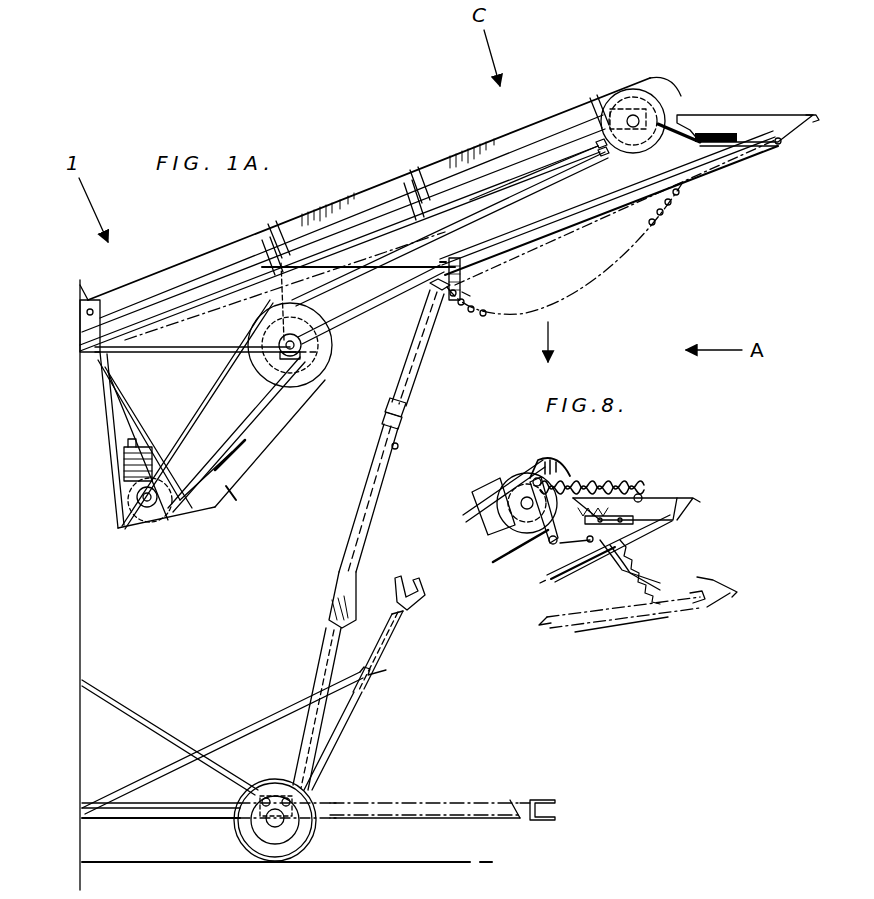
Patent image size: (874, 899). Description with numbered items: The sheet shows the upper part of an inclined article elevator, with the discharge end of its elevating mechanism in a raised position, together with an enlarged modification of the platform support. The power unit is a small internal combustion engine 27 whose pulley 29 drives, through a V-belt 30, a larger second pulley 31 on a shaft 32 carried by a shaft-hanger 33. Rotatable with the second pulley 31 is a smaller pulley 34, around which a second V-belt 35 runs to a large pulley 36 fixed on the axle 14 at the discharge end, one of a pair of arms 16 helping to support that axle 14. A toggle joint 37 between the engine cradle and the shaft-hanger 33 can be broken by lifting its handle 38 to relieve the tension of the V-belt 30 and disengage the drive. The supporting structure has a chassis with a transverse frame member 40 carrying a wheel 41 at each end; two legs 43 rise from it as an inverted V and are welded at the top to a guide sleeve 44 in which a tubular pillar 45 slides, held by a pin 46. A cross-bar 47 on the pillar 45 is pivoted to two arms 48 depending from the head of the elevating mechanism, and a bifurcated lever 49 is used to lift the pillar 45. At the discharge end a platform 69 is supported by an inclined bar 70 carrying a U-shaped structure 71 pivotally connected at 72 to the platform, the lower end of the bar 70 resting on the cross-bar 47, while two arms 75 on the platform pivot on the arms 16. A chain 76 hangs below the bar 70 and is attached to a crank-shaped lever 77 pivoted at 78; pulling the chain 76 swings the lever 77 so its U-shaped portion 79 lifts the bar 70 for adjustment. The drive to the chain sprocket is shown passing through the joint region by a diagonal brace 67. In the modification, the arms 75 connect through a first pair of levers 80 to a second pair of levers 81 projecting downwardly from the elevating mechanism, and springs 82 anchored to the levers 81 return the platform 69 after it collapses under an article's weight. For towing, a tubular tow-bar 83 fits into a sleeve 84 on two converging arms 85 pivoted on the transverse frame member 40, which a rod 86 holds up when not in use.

In FIG. 1A, the axle 14 is at (632, 114).
In FIG. 8, the axle 14 is at (527, 500).
In FIG. 1A, the arms 16 is at (562, 152).
In FIG. 8, the arms 16 is at (493, 532).
In FIG. 1A, the internal combustion engine 27 is at (138, 517).
In FIG. 1A, the pulley 29 is at (149, 510).
In FIG. 1A, the V-belt 30 is at (222, 370).
In FIG. 1A, the second pulley 31 is at (332, 346).
In FIG. 1A, the shaft 32 is at (295, 358).
In FIG. 1A, the shaft-hanger 33 is at (291, 332).
In FIG. 1A, the smaller pulley 34 is at (296, 354).
In FIG. 1A, the second V-belt 35 is at (578, 205).
In FIG. 1A, the large pulley 36 is at (662, 143).
In FIG. 1A, the toggle joint 37 is at (233, 450).
In FIG. 1A, the handle 38 is at (230, 492).
In FIG. 1A, the transverse frame member 40 is at (330, 798).
In FIG. 1A, the wheel 41 is at (316, 830).
In FIG. 1A, the legs 43 is at (316, 680).
In FIG. 1A, the guide sleeve 44 is at (405, 408).
In FIG. 1A, the tubular pillar 45 is at (410, 382).
In FIG. 1A, the pin 46 is at (399, 445).
In FIG. 1A, the cross-bar 47 is at (440, 294).
In FIG. 1A, the arms 48 is at (442, 208).
In FIG. 1A, the lever 49 is at (339, 572).
In FIG. 1A, the diagonal brace 67 is at (438, 272).
In FIG. 1A, the platform 69 is at (753, 120).
In FIG. 8, the platform 69 is at (683, 505).
In FIG. 1A, the inclined bar 70 is at (672, 190).
In FIG. 8, the inclined bar 70 is at (548, 580).
In FIG. 1A, the U-shaped structure 71 is at (752, 148).
In FIG. 1A, the pivotal connection 72 is at (779, 146).
In FIG. 1A, the arms 75 is at (690, 128).
In FIG. 8, the arms 75 is at (612, 498).
In FIG. 1A, the chain 76 is at (645, 235).
In FIG. 1A, the crank-shaped lever 77 is at (472, 293).
In FIG. 1A, the pivot 78 is at (440, 262).
In FIG. 1A, the U-shaped portion 79 is at (456, 267).
In FIG. 8, the first pair of levers 80 is at (562, 503).
In FIG. 8, the second pair of levers 81 is at (547, 535).
In FIG. 8, the springs 82 is at (592, 510).
In FIG. 1A, the tow-bar 83 is at (407, 612).
In FIG. 1A, the sleeve 84 is at (390, 664).
In FIG. 1A, the converging arms 85 is at (346, 730).
In FIG. 1A, the rod 86 is at (258, 724).